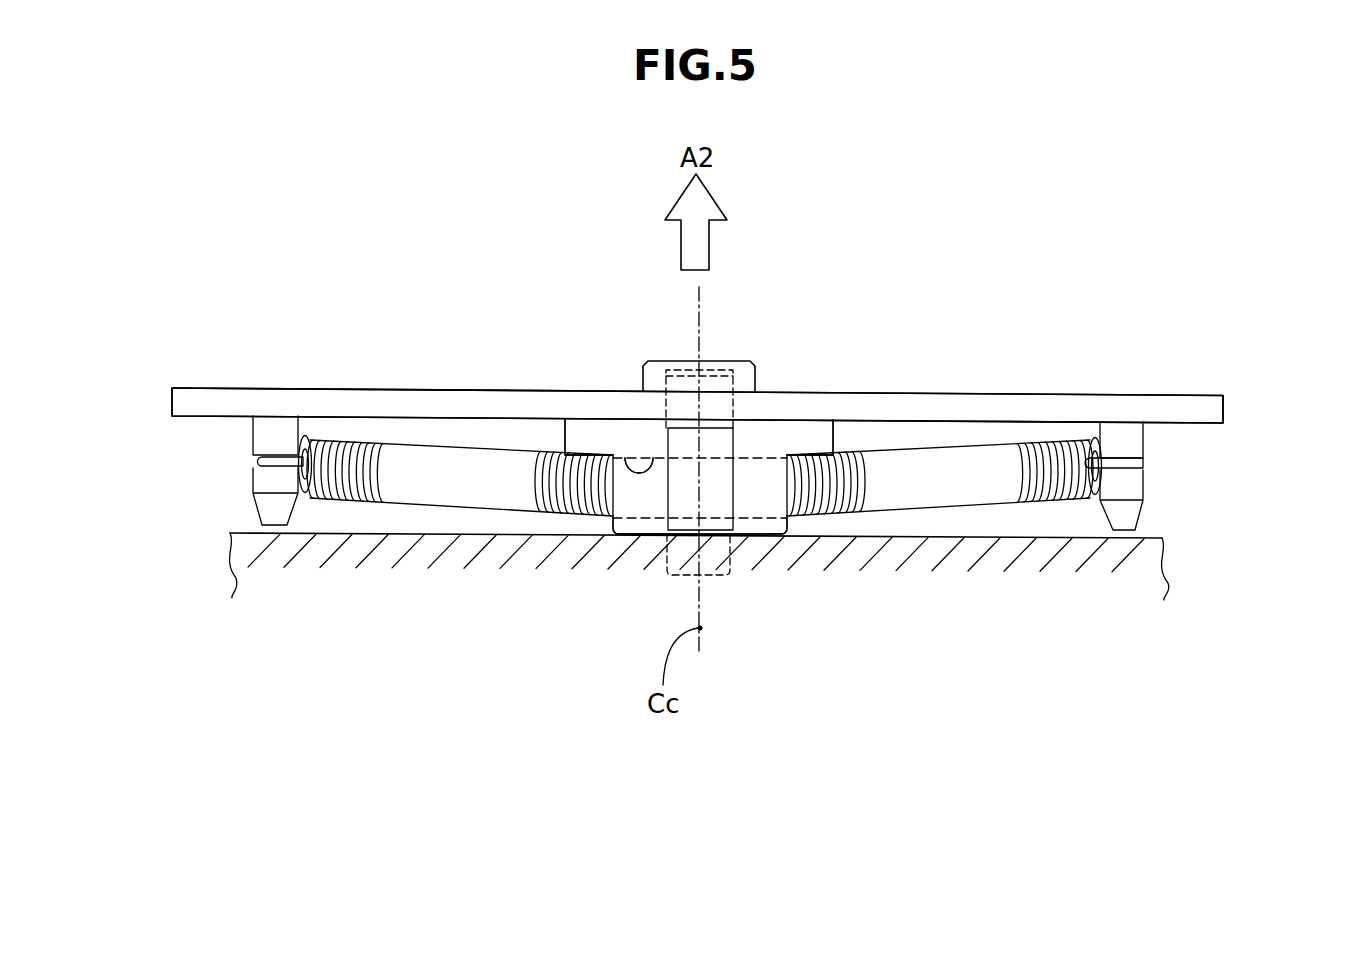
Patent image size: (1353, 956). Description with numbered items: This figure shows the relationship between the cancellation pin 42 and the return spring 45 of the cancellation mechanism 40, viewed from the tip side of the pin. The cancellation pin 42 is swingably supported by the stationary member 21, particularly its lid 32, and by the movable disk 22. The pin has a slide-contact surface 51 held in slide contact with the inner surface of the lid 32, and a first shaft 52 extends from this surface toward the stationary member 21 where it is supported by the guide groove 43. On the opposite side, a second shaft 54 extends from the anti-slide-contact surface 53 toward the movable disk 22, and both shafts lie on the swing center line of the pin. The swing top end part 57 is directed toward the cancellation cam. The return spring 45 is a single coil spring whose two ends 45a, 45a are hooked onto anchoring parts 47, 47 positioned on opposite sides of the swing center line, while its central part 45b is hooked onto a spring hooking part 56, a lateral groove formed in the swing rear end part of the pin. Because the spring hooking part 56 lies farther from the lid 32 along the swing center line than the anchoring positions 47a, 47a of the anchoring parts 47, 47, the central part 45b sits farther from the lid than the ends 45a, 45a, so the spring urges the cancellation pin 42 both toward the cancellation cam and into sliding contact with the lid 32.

The stationary member 21 is at (697, 405).
The movable disk 22 is at (1147, 589).
The lid 32 is at (1203, 407).
The cancellation mechanism 40 is at (235, 230).
The cancellation pin 42 is at (769, 440).
The guide groove 43 is at (677, 366).
The return spring 45 is at (455, 512).
The end of the coil spring 45a is at (285, 468).
The central part of the coil spring 45b is at (628, 518).
The anchoring part 47 is at (267, 432).
The anchoring position 47a is at (257, 443).
The slide-contact surface 51 is at (808, 420).
The first shaft 52 is at (717, 372).
The anti-slide-contact surface 53 is at (755, 540).
The second shaft 54 is at (715, 578).
The spring hooking part 56 is at (625, 457).
The swing top end part 57 is at (723, 485).